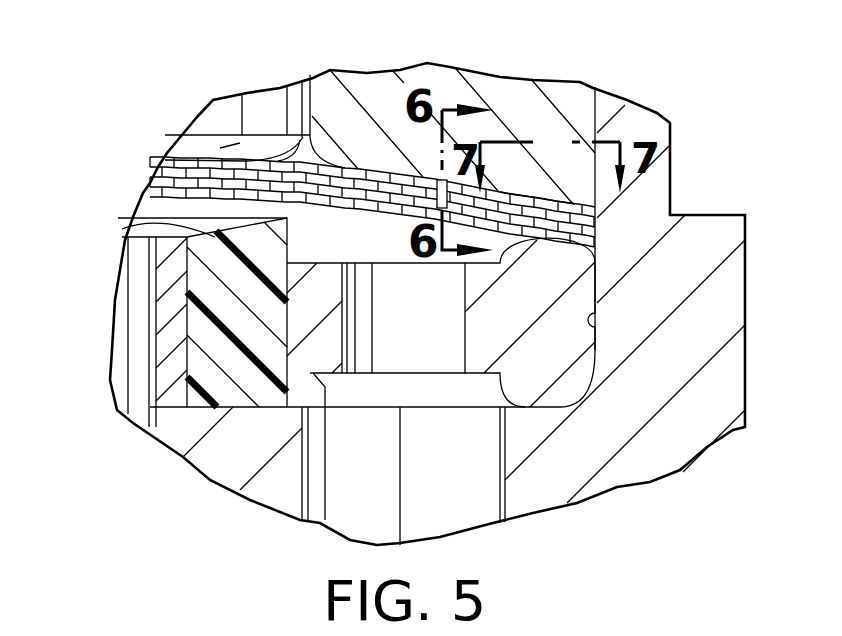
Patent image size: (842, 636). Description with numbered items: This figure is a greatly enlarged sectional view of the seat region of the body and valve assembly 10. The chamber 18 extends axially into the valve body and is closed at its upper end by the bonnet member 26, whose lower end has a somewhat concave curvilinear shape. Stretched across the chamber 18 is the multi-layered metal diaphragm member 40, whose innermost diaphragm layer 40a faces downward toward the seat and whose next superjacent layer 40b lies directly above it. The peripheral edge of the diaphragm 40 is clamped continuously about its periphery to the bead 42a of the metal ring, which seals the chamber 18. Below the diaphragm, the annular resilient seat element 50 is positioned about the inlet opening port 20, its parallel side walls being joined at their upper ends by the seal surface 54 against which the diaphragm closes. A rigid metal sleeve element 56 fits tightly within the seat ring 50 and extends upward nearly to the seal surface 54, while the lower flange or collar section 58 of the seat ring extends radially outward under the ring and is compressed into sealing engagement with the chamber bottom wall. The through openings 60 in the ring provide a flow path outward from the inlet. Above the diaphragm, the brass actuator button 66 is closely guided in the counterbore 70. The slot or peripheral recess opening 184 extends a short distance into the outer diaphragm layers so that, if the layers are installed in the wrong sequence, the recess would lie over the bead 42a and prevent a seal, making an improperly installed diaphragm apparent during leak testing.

The body and valve assembly 10 is at (664, 96).
The chamber 18 is at (598, 319).
The inlet opening port 20 is at (300, 473).
The bonnet member 26 is at (483, 93).
The diaphragm member 40 is at (308, 179).
The innermost diaphragm layer 40a is at (157, 195).
The superjacent diaphragm layer 40b is at (157, 183).
The bead 42a is at (553, 259).
The annular resilient seat element 50 is at (193, 363).
The seal surface 54 is at (130, 228).
The rigid metal sleeve element 56 is at (147, 273).
The lower flange or collar section 58 is at (313, 373).
The through openings 60 is at (465, 284).
The actuator button 66 is at (242, 110).
The counterbore 70 is at (305, 107).
The slot or peripheral recess opening 184 is at (527, 198).